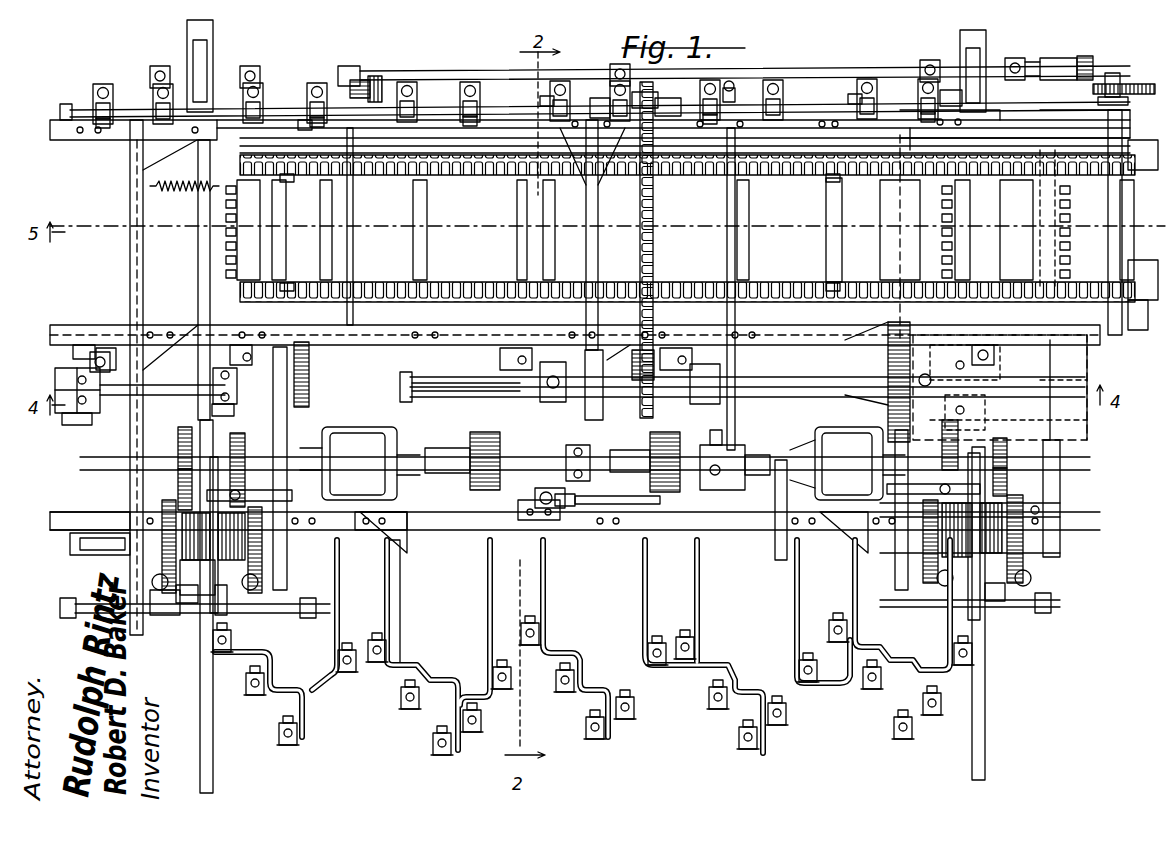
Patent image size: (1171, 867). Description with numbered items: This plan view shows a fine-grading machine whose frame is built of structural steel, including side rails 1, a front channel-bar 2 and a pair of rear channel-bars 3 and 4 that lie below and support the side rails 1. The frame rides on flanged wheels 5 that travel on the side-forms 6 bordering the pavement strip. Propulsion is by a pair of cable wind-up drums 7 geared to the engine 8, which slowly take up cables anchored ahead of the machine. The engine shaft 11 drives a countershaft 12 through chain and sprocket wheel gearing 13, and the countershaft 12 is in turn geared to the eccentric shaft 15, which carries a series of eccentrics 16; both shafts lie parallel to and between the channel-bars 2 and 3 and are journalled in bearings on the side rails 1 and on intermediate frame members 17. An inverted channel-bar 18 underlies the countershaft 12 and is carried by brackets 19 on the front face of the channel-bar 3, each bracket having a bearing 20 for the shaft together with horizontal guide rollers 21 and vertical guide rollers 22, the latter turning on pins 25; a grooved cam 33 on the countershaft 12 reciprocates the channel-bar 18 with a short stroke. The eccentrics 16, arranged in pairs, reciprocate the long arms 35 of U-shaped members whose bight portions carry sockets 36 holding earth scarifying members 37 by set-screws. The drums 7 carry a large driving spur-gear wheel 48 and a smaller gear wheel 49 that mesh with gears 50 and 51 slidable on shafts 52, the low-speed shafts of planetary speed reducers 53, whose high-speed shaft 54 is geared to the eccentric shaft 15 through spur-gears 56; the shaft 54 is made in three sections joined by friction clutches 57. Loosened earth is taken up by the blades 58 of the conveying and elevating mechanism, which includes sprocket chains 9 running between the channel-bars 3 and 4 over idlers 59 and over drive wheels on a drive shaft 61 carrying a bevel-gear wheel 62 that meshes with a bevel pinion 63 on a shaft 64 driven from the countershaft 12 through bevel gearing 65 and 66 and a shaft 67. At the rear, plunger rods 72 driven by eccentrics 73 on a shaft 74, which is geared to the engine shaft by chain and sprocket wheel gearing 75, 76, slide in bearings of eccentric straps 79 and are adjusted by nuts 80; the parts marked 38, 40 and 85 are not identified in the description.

The side rails 1 is at (130, 284).
The front channel-bar 2 is at (98, 514).
The rear channel-bar 3 is at (178, 325).
The rear channel-bar 4 is at (192, 142).
The flanged wheels 5 is at (192, 50).
The side-forms 6 is at (200, 668).
The cable wind-up drums 7 is at (197, 577).
The engine 8 is at (1078, 380).
The sprocket chains 9 is at (668, 176).
The engine shaft 11 is at (706, 378).
The countershaft 12 is at (478, 377).
The chain and sprocket wheel gearing 13 is at (638, 350).
The eccentric shaft 15 is at (563, 455).
The eccentrics 16 is at (244, 445).
The intermediate frame members 17 is at (612, 358).
The inverted channel-bar 18 is at (446, 380).
The brackets 19 is at (82, 345).
The bearing 20 is at (88, 414).
The guide rollers 21 is at (55, 387).
The guide rollers 22 is at (104, 370).
The pins 25 is at (108, 350).
The cam 33 is at (553, 374).
The long arms 35 is at (337, 626).
The sockets 36 is at (246, 683).
The earth scarifying members 37 is at (278, 734).
The pivot bearing 38 is at (560, 504).
The mounting block 40 is at (545, 504).
The large diameter driving spur-gear wheel 48 is at (262, 578).
The smaller gear wheel 49 is at (162, 562).
The gear 50 is at (258, 487).
The gear 51 is at (178, 487).
The shafts 52 is at (178, 447).
The planetary speed reducers 53 is at (380, 525).
The high-speed shaft 54 is at (735, 482).
The spur-gear 56 is at (625, 506).
The friction clutches 57 is at (472, 470).
The blades 58 is at (237, 240).
The idlers 59 is at (288, 182).
The drive shaft 61 is at (1112, 72).
The bevel-gear wheel 62 is at (1138, 83).
The bevel pinion 63 is at (1078, 62).
The shaft 64 is at (880, 67).
The bevel gearing 65 is at (335, 370).
The bevel gearing 66 is at (354, 88).
The shaft 67 is at (353, 199).
The plunger rods 72 is at (318, 84).
The eccentrics 73 is at (300, 126).
The shaft 74 is at (278, 109).
The chain and sprocket wheel gearing 75 is at (655, 248).
The chain and sprocket wheel gearing 76 is at (652, 104).
The eccentric straps 79 is at (155, 108).
The nuts 80 is at (616, 98).
The shaft bracket 85 is at (143, 545).